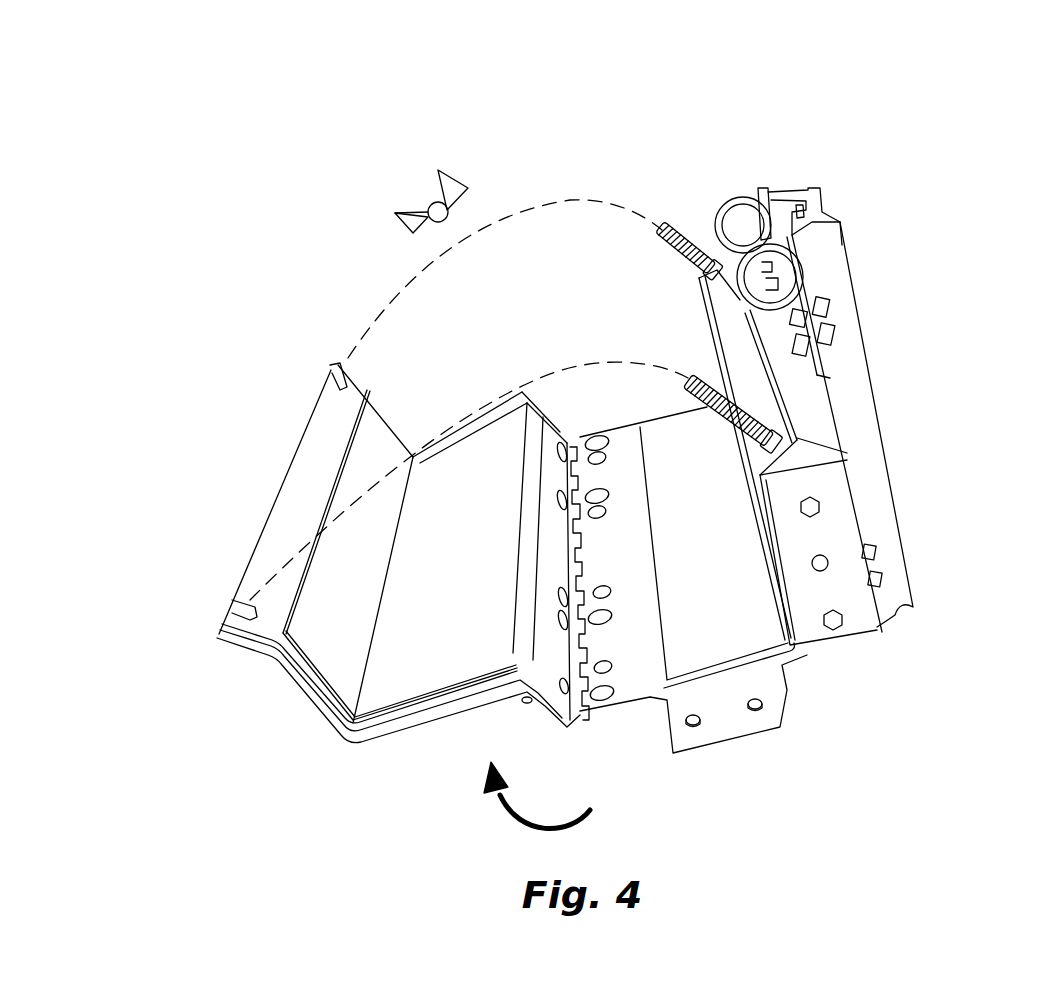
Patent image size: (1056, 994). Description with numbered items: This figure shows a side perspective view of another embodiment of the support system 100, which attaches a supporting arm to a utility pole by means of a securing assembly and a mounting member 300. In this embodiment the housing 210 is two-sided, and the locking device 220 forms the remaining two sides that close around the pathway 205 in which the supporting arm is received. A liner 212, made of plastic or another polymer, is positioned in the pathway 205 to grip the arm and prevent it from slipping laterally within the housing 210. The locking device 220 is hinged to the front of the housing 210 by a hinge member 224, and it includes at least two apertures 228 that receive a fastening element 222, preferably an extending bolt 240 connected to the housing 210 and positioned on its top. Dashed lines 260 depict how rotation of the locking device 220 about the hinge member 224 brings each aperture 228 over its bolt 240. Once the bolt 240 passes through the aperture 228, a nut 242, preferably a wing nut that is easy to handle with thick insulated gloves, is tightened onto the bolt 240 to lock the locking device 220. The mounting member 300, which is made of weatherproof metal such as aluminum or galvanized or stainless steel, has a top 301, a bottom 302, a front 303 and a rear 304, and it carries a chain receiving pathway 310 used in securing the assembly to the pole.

The support system 100 is at (255, 172).
The pathway 205 is at (701, 648).
The housing 210 is at (419, 718).
The liner 212 is at (325, 624).
The locking device 220 is at (778, 710).
The fastening element 222 is at (663, 230).
The hinge member 224 is at (573, 713).
The aperture 228 is at (338, 383).
The bolt 240 is at (657, 230).
The nut 242 is at (428, 212).
The dashed lines 260 is at (393, 306).
The mounting member 300 is at (872, 310).
The top 301 is at (797, 192).
The bottom 302 is at (883, 613).
The front 303 is at (757, 197).
The rear 304 is at (883, 447).
The chain receiving pathway 310 is at (720, 200).